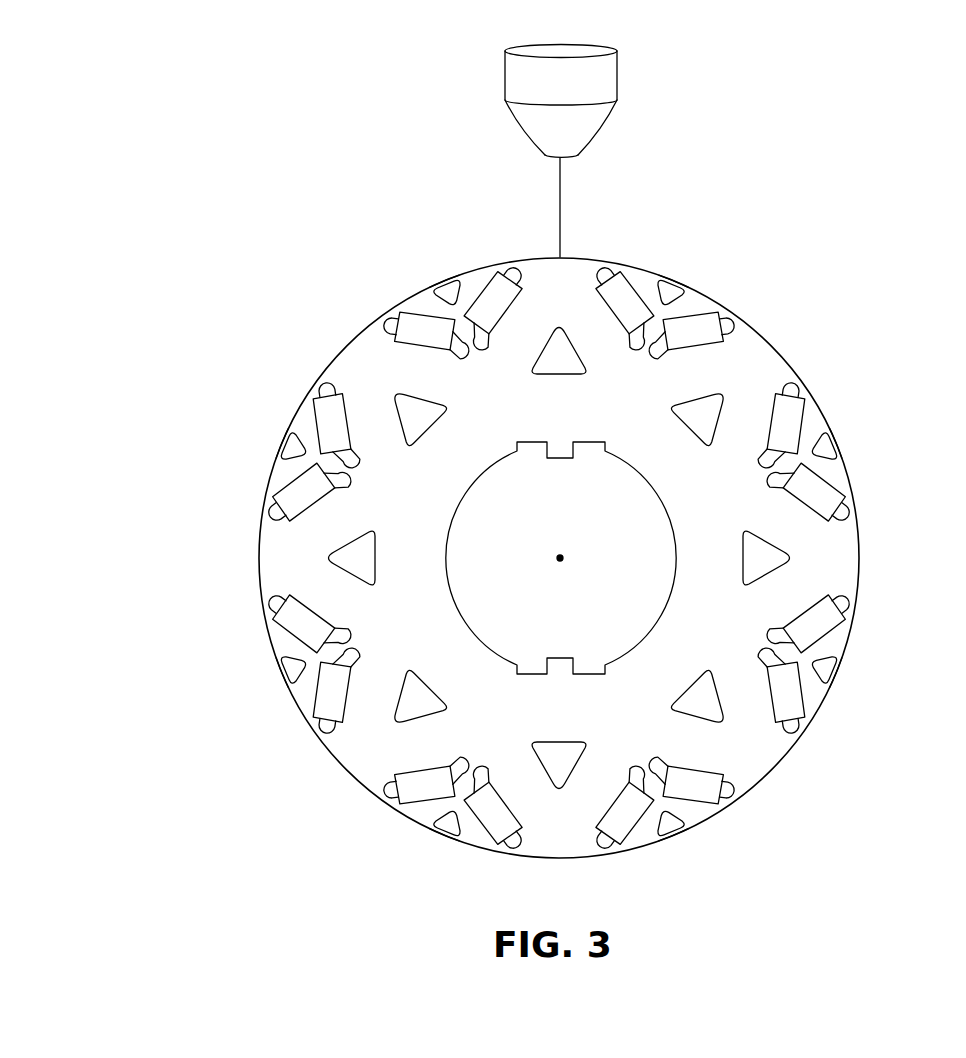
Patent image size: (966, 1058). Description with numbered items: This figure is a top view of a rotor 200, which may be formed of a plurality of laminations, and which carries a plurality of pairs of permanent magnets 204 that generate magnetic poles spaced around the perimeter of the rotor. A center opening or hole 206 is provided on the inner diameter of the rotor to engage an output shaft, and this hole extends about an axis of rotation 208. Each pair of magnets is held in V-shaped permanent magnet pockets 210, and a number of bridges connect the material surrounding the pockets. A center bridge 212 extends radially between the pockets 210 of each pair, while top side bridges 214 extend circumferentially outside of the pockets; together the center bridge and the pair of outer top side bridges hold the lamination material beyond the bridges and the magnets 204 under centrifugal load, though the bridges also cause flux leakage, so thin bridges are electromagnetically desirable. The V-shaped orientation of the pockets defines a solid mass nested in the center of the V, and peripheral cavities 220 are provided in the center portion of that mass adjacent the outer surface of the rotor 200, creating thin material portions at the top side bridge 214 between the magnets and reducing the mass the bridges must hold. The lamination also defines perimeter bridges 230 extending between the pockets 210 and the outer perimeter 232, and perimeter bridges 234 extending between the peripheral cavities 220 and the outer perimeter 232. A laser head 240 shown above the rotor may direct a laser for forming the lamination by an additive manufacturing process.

The rotor 200 is at (796, 224).
The permanent magnets 204 is at (543, 514).
The center opening 206 is at (458, 498).
The axis of rotation 208 is at (562, 556).
The permanent magnet pockets 210 is at (513, 258).
The center bridge 212 is at (626, 345).
The top side bridges 214 is at (646, 273).
The peripheral cavities 220 is at (665, 288).
The perimeter bridges 230 is at (506, 517).
The outer perimeter 232 is at (273, 470).
The perimeter bridges 234 is at (278, 445).
The laser head 240 is at (617, 77).